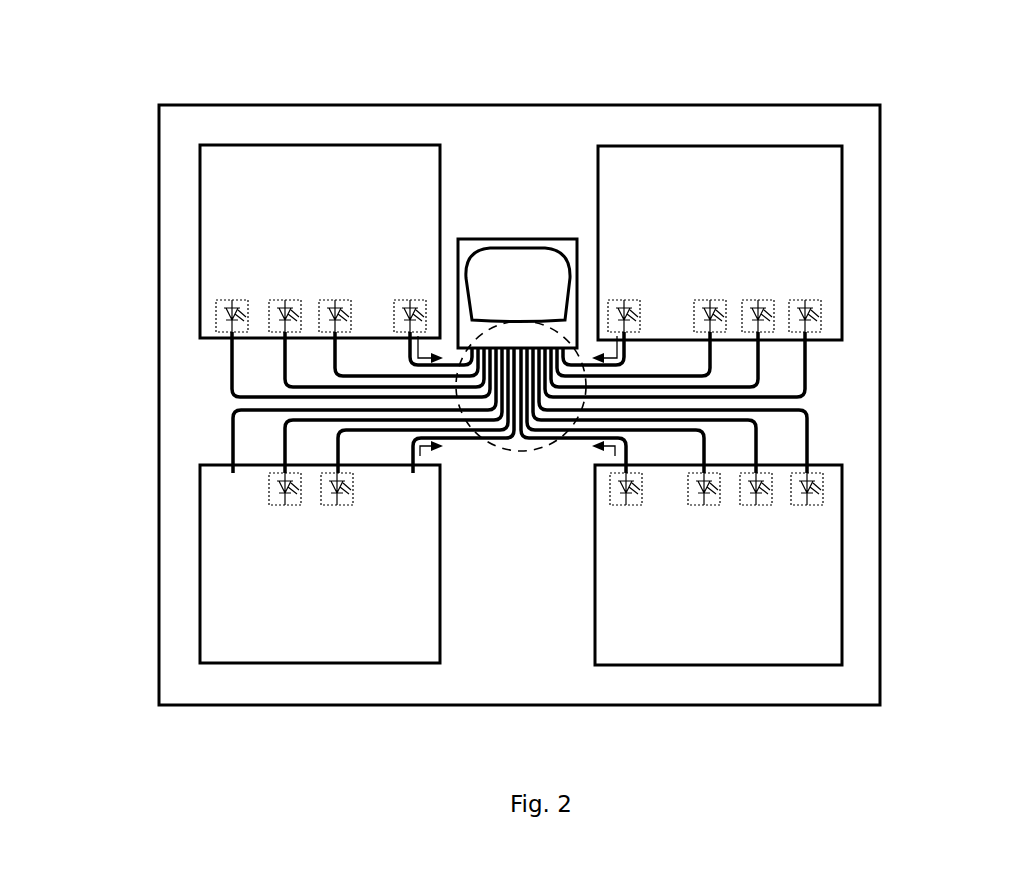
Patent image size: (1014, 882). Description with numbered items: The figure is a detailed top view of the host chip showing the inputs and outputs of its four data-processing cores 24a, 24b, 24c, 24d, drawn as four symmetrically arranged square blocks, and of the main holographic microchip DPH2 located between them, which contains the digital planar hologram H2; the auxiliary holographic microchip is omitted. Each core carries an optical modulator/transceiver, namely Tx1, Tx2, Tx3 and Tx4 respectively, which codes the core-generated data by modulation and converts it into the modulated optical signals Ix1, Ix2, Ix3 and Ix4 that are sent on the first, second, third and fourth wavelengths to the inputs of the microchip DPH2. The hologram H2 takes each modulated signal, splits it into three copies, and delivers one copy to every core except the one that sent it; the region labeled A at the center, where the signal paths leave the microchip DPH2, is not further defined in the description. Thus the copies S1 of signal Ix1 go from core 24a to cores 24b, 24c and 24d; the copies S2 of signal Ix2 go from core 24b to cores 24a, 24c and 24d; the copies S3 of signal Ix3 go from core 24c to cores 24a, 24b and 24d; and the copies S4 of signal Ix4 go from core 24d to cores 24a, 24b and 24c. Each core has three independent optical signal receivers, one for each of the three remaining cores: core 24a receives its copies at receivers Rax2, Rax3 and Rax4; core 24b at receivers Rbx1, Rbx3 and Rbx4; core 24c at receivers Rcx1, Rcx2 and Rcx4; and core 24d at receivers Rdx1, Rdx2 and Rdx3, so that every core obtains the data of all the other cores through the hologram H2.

The data-processing core 24a is at (212, 200).
The data-processing core 24b is at (835, 205).
The data-processing core 24c is at (218, 583).
The data-processing core 24d is at (832, 517).
The main holographic microchip DPH2 is at (472, 238).
The digital planar hologram H2 is at (515, 265).
The central contact region A is at (520, 455).
The optical signal receiver Rax2 is at (231, 300).
The optical signal receiver Rax3 is at (285, 300).
The optical signal receiver Rax4 is at (335, 300).
The optical modulator/transceiver Tx1 is at (407, 300).
The modulated optical signal Ix1 is at (418, 338).
The optical signal receiver Rbx1 is at (805, 300).
The optical signal receiver Rbx3 is at (758, 300).
The optical signal receiver Rbx4 is at (710, 300).
The optical modulator/transceiver Tx2 is at (624, 300).
The modulated optical signal Ix2 is at (607, 338).
The optical signal receiver Rcx1 is at (230, 505).
The optical signal receiver Rcx2 is at (283, 508).
The optical signal receiver Rcx4 is at (337, 508).
The optical modulator/transceiver Tx3 is at (413, 497).
The modulated optical signal Ix3 is at (446, 452).
The optical signal receiver Rdx1 is at (808, 508).
The optical signal receiver Rdx2 is at (757, 508).
The optical signal receiver Rdx3 is at (704, 508).
The optical modulator/transceiver Tx4 is at (626, 508).
The modulated optical signal Ix4 is at (590, 452).
The split copy signal S1 is at (813, 360).
The split copy signal S2 is at (218, 360).
The split copy signal S3 is at (270, 360).
The split copy signal S4 is at (320, 360).